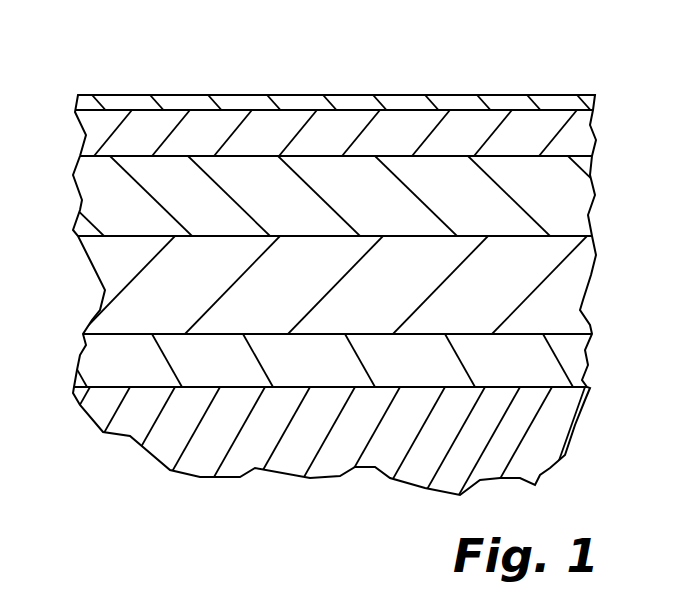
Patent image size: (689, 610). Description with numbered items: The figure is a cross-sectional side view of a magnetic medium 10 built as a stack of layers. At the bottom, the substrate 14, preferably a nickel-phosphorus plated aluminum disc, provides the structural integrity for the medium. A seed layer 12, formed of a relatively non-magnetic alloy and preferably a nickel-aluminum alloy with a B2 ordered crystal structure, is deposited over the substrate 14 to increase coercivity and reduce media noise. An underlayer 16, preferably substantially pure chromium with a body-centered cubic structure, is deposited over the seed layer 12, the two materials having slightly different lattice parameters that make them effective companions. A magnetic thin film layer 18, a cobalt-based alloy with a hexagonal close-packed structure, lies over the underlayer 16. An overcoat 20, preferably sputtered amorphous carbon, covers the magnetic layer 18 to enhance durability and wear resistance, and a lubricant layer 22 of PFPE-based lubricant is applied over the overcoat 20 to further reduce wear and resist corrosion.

The magnetic medium 10 is at (333, 252).
The seed layer 12 is at (572, 353).
The substrate 14 is at (547, 432).
The underlayer 16 is at (572, 272).
The magnetic thin film layer 18 is at (560, 183).
The overcoat 20 is at (575, 128).
The lubricant layer 22 is at (548, 101).